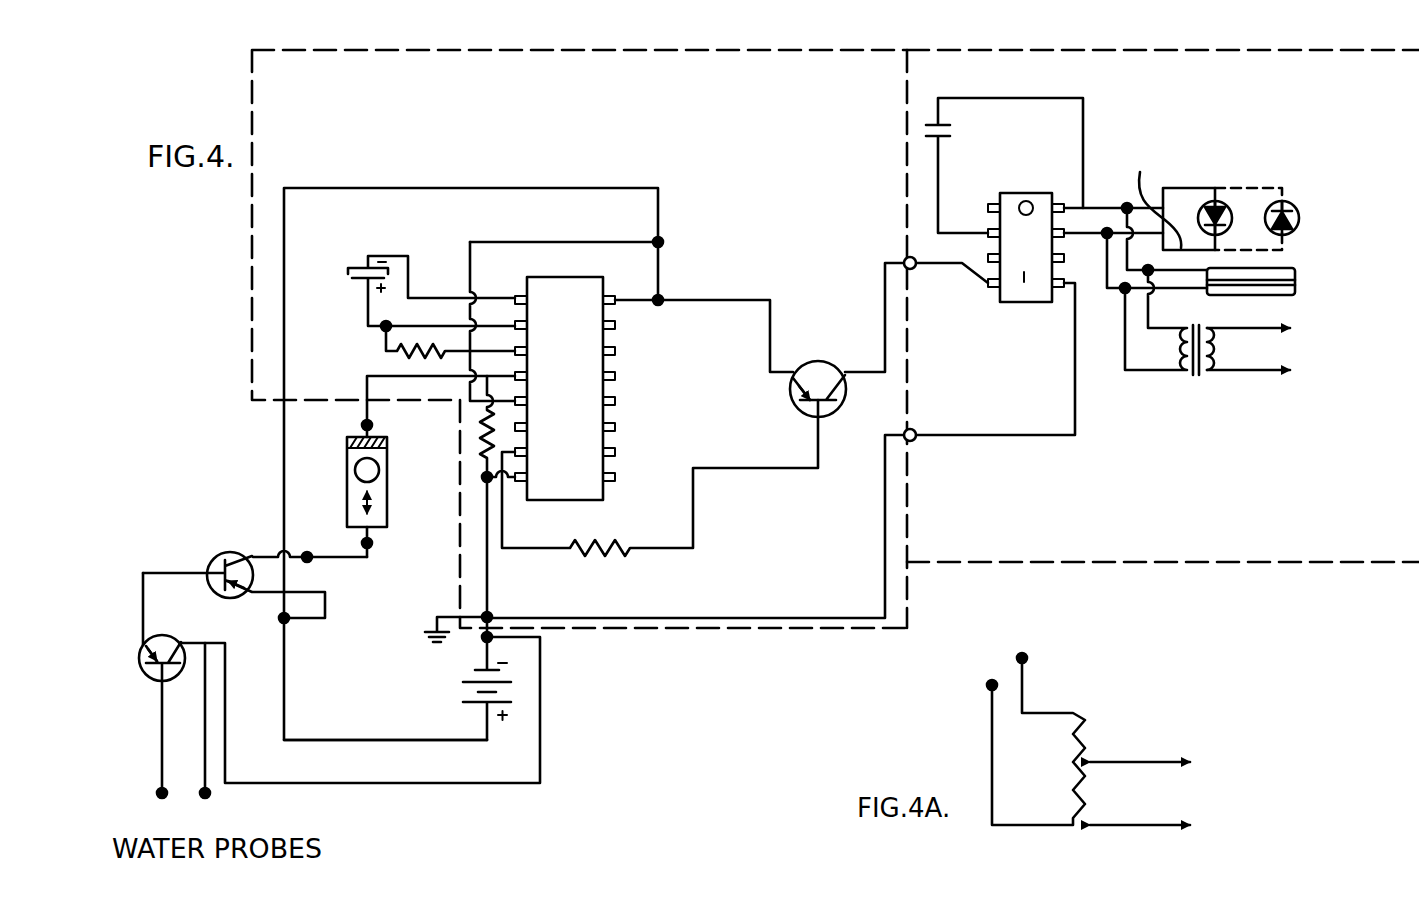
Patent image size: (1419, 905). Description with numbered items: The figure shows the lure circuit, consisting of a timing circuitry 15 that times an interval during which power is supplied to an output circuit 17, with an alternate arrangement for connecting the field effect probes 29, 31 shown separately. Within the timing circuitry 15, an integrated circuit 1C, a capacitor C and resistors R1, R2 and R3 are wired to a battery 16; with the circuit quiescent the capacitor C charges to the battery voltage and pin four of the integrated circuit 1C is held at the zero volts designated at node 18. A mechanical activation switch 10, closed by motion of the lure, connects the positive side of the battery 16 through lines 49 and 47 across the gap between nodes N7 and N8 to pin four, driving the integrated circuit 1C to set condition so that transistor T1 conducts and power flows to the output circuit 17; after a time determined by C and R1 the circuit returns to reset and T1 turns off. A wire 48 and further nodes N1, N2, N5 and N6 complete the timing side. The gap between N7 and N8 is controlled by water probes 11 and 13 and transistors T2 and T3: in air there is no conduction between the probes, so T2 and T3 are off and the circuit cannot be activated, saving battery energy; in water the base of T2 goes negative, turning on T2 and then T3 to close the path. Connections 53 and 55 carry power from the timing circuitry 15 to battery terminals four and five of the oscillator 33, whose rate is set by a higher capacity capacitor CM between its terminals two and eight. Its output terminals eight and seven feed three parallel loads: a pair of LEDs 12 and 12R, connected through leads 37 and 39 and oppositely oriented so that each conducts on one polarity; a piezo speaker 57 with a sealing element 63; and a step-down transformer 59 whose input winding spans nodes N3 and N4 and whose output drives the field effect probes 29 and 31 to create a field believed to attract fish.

In FIG. 4, the timing circuitry 15 is at (666, 50).
In FIG. 4, the output circuit 17 is at (1088, 50).
In FIG. 4, the activation switch 10 is at (330, 472).
In FIG. 4, the probe 11 is at (165, 812).
In FIG. 4, the probe 13 is at (206, 739).
In FIG. 4, the battery 16 is at (462, 690).
In FIG. 4, the node 18 is at (490, 617).
In FIG. 4, the oscillator 33 is at (1028, 193).
In FIG. 4, the lead 37 is at (1188, 188).
In FIG. 4, the lead 39 is at (1149, 197).
In FIG. 4, the light emitting diode 12 is at (1220, 199).
In FIG. 4, the light emitting diode 12R is at (1292, 201).
In FIG. 4, the piezo speaker 57 is at (1290, 253).
In FIG. 4, the sealing element 63 is at (1295, 270).
In FIG. 4, the step-down transformer 59 is at (1188, 382).
In FIG. 4, the line 47 is at (342, 560).
In FIG. 4, the conductor 48 is at (372, 422).
In FIG. 4, the line 49 is at (380, 740).
In FIG. 4, the connection 53 is at (884, 307).
In FIG. 4, the connection 55 is at (886, 488).
In FIG. 4, the field effect probe 29 is at (1309, 368).
In FIG. 4A, the field effect probe 29 is at (1199, 801).
In FIG. 4, the field effect probe 31 is at (1295, 398).
In FIG. 4A, the field effect probe 31 is at (1185, 843).
In FIG. 4, the capacitor C is at (426, 278).
In FIG. 4, the resistor R1 is at (404, 352).
In FIG. 4, the resistor R2 is at (479, 432).
In FIG. 4, the resistor R3 is at (632, 546).
In FIG. 4, the transistor T1 is at (832, 362).
In FIG. 4, the transistor T2 is at (138, 668).
In FIG. 4, the transistor T3 is at (216, 562).
In FIG. 4, the integrated circuit 1C is at (619, 410).
In FIG. 4, the capacitor CM is at (948, 128).
In FIG. 4, the node N1 is at (915, 248).
In FIG. 4, the node N2 is at (915, 420).
In FIG. 4A, the node N3 is at (1038, 729).
In FIG. 4, the node N4 is at (1124, 292).
In FIG. 4A, the node N4 is at (983, 671).
In FIG. 4, the node N5 is at (372, 546).
In FIG. 4, the node N6 is at (364, 426).
In FIG. 4, the node N7 is at (288, 622).
In FIG. 4, the node N8 is at (306, 554).